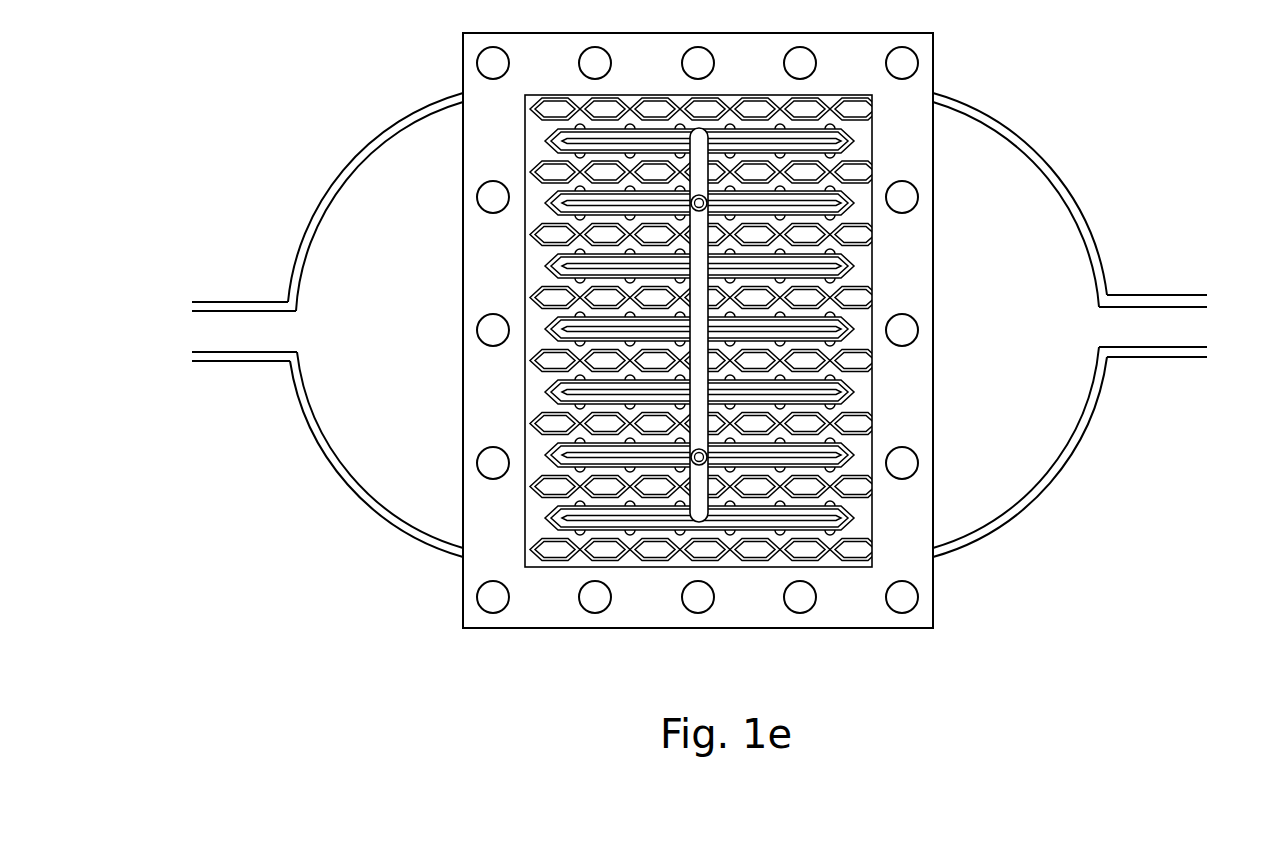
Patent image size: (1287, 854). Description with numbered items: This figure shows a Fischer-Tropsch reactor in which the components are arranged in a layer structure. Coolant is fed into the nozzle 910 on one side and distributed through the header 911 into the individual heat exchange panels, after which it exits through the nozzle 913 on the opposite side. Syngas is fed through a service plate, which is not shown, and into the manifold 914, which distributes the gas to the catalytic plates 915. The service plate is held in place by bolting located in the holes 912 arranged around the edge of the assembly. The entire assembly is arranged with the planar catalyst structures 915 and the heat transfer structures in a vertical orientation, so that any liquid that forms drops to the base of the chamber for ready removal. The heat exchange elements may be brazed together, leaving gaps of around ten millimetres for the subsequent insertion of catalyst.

The nozzle 910 is at (205, 312).
The header 911 is at (388, 330).
The holes 912 is at (508, 602).
The nozzle 913 is at (1188, 308).
The manifold 914 is at (708, 522).
The catalytic plates 915 is at (545, 453).